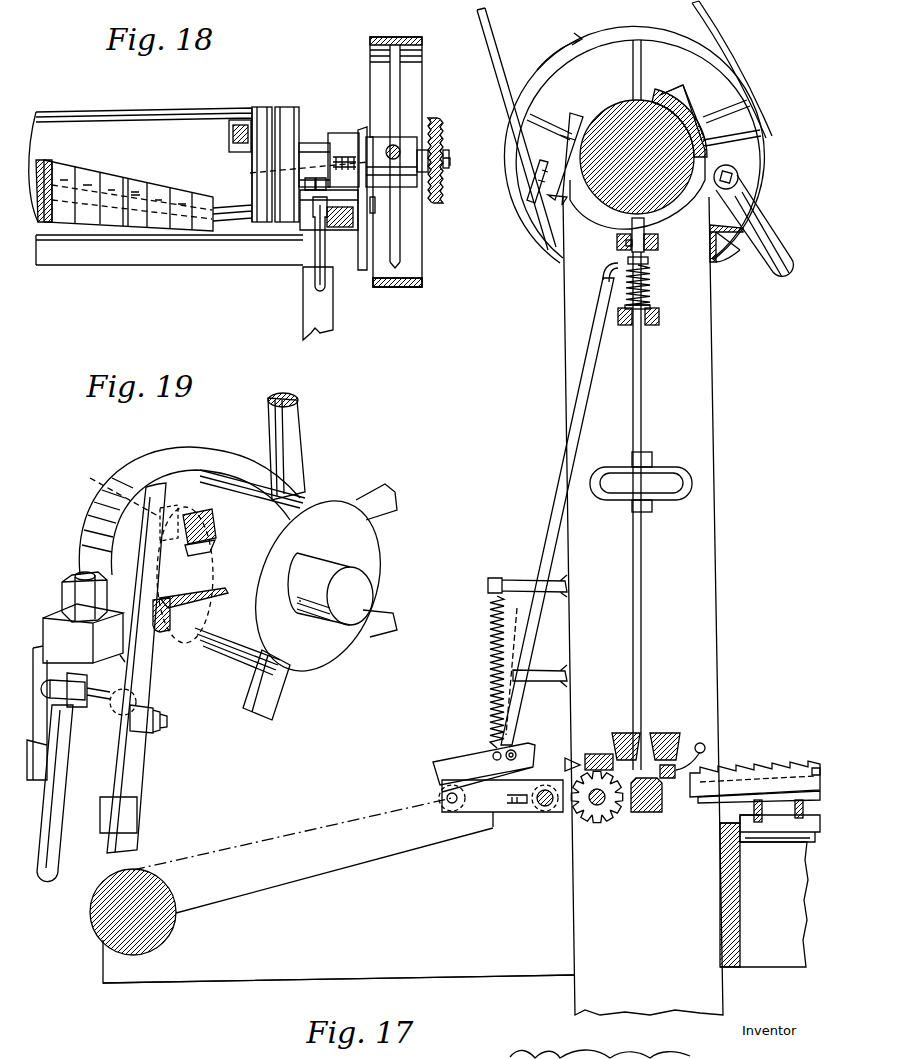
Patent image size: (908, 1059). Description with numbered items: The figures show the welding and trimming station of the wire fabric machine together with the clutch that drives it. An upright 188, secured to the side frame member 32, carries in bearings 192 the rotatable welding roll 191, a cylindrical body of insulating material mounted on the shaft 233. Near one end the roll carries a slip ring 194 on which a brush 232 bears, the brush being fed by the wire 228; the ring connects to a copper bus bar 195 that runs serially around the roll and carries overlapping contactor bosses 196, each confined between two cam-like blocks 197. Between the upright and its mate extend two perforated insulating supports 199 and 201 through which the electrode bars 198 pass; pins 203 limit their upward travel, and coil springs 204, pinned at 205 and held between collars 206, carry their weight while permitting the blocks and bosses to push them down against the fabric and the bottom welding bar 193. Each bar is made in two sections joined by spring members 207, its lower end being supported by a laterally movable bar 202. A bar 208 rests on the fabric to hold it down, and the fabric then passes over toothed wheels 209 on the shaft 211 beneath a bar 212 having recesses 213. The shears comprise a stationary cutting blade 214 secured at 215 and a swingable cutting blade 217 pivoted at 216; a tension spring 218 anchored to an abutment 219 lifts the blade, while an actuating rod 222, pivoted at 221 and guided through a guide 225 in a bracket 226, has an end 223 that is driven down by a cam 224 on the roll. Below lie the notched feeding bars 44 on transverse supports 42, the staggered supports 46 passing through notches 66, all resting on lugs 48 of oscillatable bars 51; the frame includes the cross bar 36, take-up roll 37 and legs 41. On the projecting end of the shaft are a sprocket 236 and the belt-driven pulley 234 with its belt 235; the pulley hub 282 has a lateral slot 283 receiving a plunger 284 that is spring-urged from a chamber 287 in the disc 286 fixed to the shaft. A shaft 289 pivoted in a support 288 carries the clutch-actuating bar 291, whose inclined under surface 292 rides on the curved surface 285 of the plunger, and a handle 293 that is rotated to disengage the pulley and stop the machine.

In FIG. 18, the welding roll 191 is at (92, 112).
In FIG. 17, the welding roll 191 is at (608, 115).
In FIG. 18, the slip ring 194 is at (260, 107).
In FIG. 17, the slip ring 194 is at (617, 100).
In FIG. 18, the contactor bosses 196 is at (68, 185).
In FIG. 17, the contactor bosses 196 is at (690, 115).
In FIG. 18, the cam-like blocks 197 is at (132, 198).
In FIG. 17, the cam-like blocks 197 is at (660, 95).
In FIG. 18, the cam 224 is at (230, 132).
In FIG. 18, the disc 286 is at (288, 135).
In FIG. 19, the disc 286 is at (222, 458).
In FIG. 18, the bearings 192 is at (312, 143).
In FIG. 19, the bearings 192 is at (68, 578).
In FIG. 18, the chamber 287 is at (296, 173).
In FIG. 19, the chamber 287 is at (107, 489).
In FIG. 18, the plunger 284 is at (345, 133).
In FIG. 19, the plunger 284 is at (190, 515).
In FIG. 18, the curved surface 285 is at (388, 147).
In FIG. 19, the curved surface 285 is at (214, 522).
In FIG. 18, the hub portion 282 is at (418, 140).
In FIG. 19, the hub portion 282 is at (310, 505).
In FIG. 18, the sprocket 236 is at (437, 118).
In FIG. 18, the shaft 233 is at (448, 150).
In FIG. 19, the shaft 233 is at (335, 565).
In FIG. 18, the lateral slot 283 is at (449, 165).
In FIG. 19, the lateral slot 283 is at (210, 548).
In FIG. 18, the clutch-actuating bar 291 is at (364, 270).
In FIG. 19, the clutch-actuating bar 291 is at (158, 678).
In FIG. 17, the clutch-actuating bar 291 is at (760, 218).
In FIG. 18, the support 288 is at (355, 218).
In FIG. 19, the support 288 is at (120, 730).
In FIG. 17, the support 288 is at (725, 245).
In FIG. 18, the shaft 289 is at (322, 222).
In FIG. 19, the shaft 289 is at (80, 650).
In FIG. 17, the shaft 289 is at (739, 175).
In FIG. 18, the handle 293 is at (315, 282).
In FIG. 19, the handle 293 is at (62, 838).
In FIG. 17, the handle 293 is at (780, 280).
In FIG. 18, the pulley 234 is at (410, 287).
In FIG. 19, the pulley 234 is at (309, 668).
In FIG. 17, the pulley 234 is at (645, 38).
In FIG. 18, the upright 188 is at (333, 322).
In FIG. 17, the upright 188 is at (565, 352).
In FIG. 19, the inclined under surface 292 is at (175, 568).
In FIG. 17, the belt 235 is at (488, 24).
In FIG. 17, the bus bar 195 is at (765, 103).
In FIG. 17, the brush 232 is at (568, 115).
In FIG. 17, the wire 228 is at (542, 200).
In FIG. 17, the end 223 is at (632, 224).
In FIG. 17, the perforated support 199 is at (658, 242).
In FIG. 17, the pins 203 is at (626, 246).
In FIG. 17, the electrode bars 198 is at (641, 359).
In FIG. 17, the pin 205 is at (650, 259).
In FIG. 17, the coil springs 204 is at (652, 283).
In FIG. 17, the perforated support 201 is at (659, 316).
In FIG. 17, the collars 206 is at (618, 305).
In FIG. 17, the actuating rod 222 is at (563, 497).
In FIG. 17, the spring members 207 is at (632, 462).
In FIG. 17, the stationary abutment 219 is at (515, 580).
In FIG. 17, the tension spring 218 is at (490, 670).
In FIG. 17, the guide 225 is at (520, 671).
In FIG. 17, the bracket 226 is at (555, 676).
In FIG. 17, the pivot 221 is at (513, 752).
In FIG. 17, the swingable cutting blade 217 is at (460, 758).
In FIG. 17, the recesses 213 is at (568, 760).
In FIG. 17, the stationary cutting blade 214 is at (480, 822).
In FIG. 17, the securing point 215 is at (543, 810).
In FIG. 17, the pivot 216 is at (440, 795).
In FIG. 17, the side frame member 32 is at (260, 897).
In FIG. 17, the take-up roll 37 is at (110, 922).
In FIG. 17, the toothed wheels 209 is at (594, 822).
In FIG. 17, the shaft 211 is at (614, 815).
In FIG. 17, the bar 212 is at (595, 754).
In FIG. 17, the bar 208 is at (628, 733).
In FIG. 17, the laterally movable bar 202 is at (670, 733).
In FIG. 17, the bottom welding bar 193 is at (648, 815).
In FIG. 17, the notched wire feeding bars 44 is at (700, 798).
In FIG. 17, the transverse feeding bar supports 42 is at (755, 800).
In FIG. 17, the transverse supports 46 is at (795, 800).
In FIG. 17, the notches 66 is at (812, 768).
In FIG. 17, the oscillatable supporting bars 51 is at (752, 842).
In FIG. 17, the lug 48 is at (728, 830).
In FIG. 17, the cross bar 36 is at (745, 901).
In FIG. 17, the legs 41 is at (585, 994).